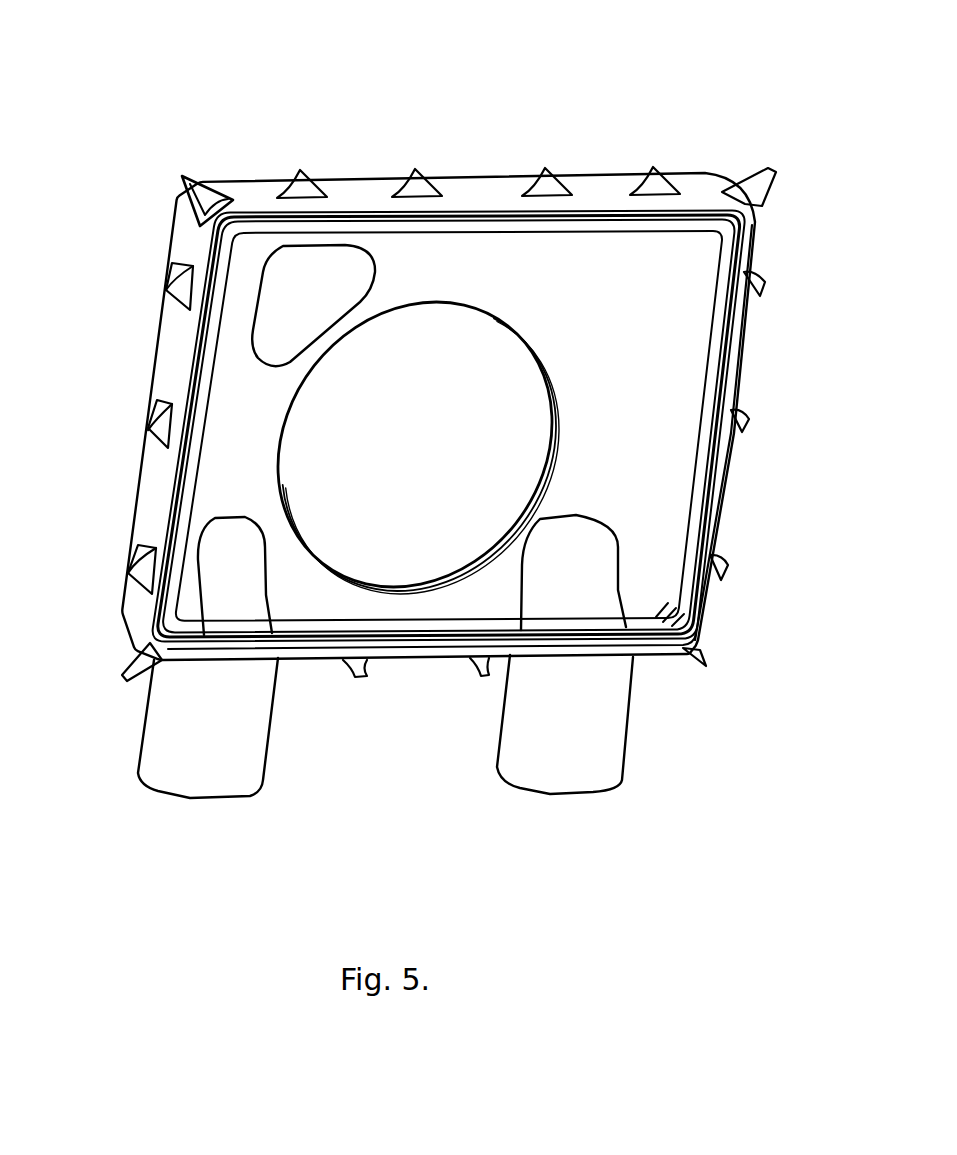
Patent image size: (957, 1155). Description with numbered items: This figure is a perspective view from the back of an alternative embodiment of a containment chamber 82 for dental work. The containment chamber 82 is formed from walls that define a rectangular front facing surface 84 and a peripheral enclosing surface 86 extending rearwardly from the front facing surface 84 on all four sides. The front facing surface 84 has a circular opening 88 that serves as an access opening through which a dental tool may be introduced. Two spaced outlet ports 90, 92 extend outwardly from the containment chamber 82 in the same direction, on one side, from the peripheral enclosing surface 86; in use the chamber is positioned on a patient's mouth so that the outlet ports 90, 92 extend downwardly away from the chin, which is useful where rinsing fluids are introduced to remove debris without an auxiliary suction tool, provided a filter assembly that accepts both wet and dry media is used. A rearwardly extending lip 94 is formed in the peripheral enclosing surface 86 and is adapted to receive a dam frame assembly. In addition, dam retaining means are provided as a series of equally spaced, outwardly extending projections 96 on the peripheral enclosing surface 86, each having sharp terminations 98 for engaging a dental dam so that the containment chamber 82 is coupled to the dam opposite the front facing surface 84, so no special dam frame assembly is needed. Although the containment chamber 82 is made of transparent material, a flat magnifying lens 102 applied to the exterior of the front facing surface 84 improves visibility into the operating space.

The containment chamber 82 is at (468, 132).
The front facing surface 84 is at (670, 307).
The peripheral enclosing surface 86 is at (150, 387).
The circular opening 88 is at (548, 384).
The outlet port 90 is at (140, 728).
The outlet port 92 is at (630, 743).
The rearwardly extending lip 94 is at (700, 503).
The outwardly extending projections 96 is at (165, 289).
The sharp terminations 98 is at (181, 177).
The flat magnifying lens 102 is at (300, 272).